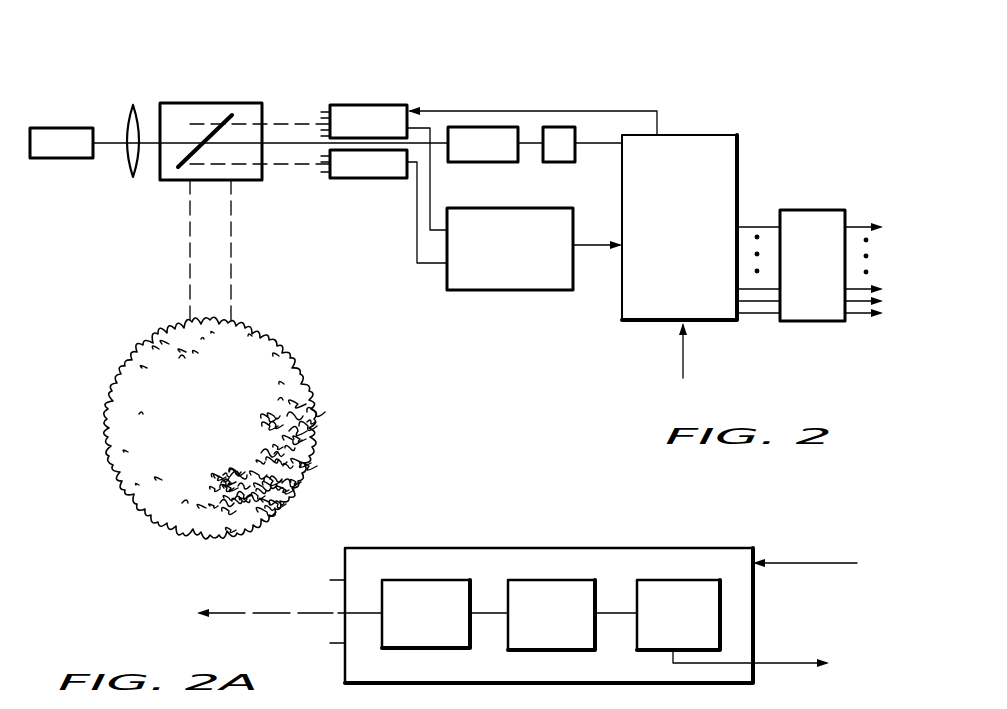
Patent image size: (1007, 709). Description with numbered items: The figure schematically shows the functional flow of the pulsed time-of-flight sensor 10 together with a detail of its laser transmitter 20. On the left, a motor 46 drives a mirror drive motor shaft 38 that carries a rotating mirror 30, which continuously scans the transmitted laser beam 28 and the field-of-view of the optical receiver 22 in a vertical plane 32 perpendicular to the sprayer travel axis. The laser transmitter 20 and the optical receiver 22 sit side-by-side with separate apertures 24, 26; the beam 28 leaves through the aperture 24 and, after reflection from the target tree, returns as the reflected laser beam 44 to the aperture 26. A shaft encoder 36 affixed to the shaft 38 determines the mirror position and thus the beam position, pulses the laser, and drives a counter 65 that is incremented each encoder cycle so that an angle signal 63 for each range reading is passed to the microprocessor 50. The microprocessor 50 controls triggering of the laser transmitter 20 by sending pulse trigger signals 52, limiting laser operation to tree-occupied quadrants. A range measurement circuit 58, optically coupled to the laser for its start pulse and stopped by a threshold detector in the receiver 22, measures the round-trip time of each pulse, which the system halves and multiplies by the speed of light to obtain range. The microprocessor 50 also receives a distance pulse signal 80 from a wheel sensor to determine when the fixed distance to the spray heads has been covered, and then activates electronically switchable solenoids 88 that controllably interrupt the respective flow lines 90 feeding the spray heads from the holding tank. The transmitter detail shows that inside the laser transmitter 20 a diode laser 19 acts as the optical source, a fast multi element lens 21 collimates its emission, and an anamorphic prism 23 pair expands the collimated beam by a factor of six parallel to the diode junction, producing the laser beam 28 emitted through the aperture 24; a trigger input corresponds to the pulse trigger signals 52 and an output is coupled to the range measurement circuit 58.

In FIG. 2, the sensor 10 is at (550, 70).
In FIG. 2, the motor 46 is at (78, 127).
In FIG. 2, the vertical plane 32 is at (133, 105).
In FIG. 2, the rotating mirror 30 is at (217, 119).
In FIG. 2, the mirror drive motor shaft 38 is at (104, 145).
In FIG. 2, the laser beam 28 is at (274, 122).
In FIG. 2A, the laser beam 28 is at (243, 613).
In FIG. 2, the reflected laser beam 44 is at (288, 166).
In FIG. 2, the aperture 24 is at (331, 108).
In FIG. 2A, the aperture 24 is at (345, 636).
In FIG. 2, the aperture 26 is at (331, 170).
In FIG. 2, the laser transmitter 20 is at (389, 105).
In FIG. 2A, the laser transmitter 20 is at (669, 545).
In FIG. 2, the optical receiver 22 is at (376, 179).
In FIG. 2, the shaft encoder 36 is at (491, 163).
In FIG. 2, the counter 65 is at (556, 163).
In FIG. 2, the angle signal 63 is at (600, 145).
In FIG. 2, the pulse trigger signals 52 is at (578, 111).
In FIG. 2A, the pulse trigger signals 52 is at (830, 562).
In FIG. 2, the microprocessor 50 is at (712, 135).
In FIG. 2, the range measurement circuit 58 is at (525, 291).
In FIG. 2A, the range measurement circuit 58 is at (768, 667).
In FIG. 2, the distance pulse signal 80 is at (684, 360).
In FIG. 2, the solenoids 88 is at (808, 210).
In FIG. 2, the flow lines 90 is at (858, 226).
In FIG. 2A, the anamorphic prism 23 is at (426, 614).
In FIG. 2A, the multi element lens 21 is at (551, 615).
In FIG. 2A, the diode laser 19 is at (678, 615).